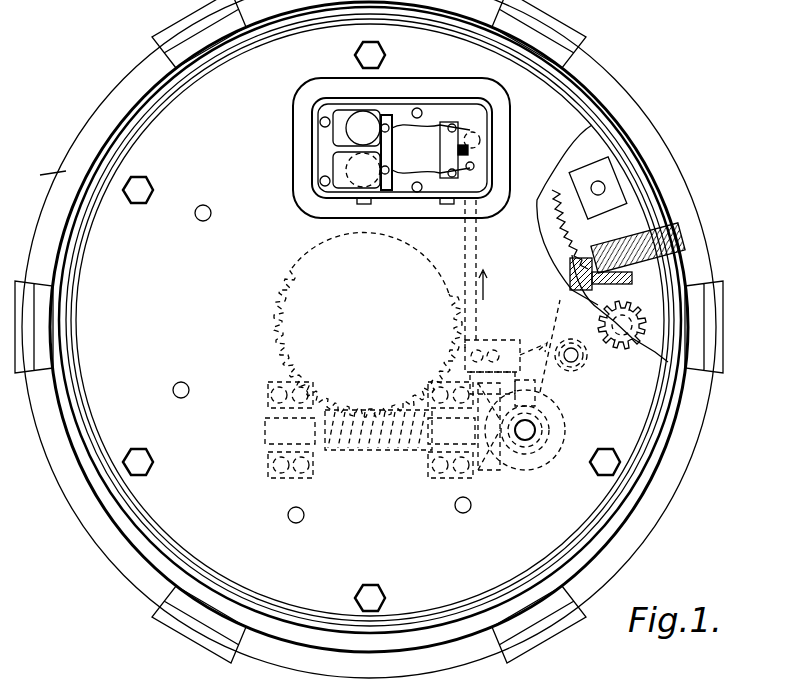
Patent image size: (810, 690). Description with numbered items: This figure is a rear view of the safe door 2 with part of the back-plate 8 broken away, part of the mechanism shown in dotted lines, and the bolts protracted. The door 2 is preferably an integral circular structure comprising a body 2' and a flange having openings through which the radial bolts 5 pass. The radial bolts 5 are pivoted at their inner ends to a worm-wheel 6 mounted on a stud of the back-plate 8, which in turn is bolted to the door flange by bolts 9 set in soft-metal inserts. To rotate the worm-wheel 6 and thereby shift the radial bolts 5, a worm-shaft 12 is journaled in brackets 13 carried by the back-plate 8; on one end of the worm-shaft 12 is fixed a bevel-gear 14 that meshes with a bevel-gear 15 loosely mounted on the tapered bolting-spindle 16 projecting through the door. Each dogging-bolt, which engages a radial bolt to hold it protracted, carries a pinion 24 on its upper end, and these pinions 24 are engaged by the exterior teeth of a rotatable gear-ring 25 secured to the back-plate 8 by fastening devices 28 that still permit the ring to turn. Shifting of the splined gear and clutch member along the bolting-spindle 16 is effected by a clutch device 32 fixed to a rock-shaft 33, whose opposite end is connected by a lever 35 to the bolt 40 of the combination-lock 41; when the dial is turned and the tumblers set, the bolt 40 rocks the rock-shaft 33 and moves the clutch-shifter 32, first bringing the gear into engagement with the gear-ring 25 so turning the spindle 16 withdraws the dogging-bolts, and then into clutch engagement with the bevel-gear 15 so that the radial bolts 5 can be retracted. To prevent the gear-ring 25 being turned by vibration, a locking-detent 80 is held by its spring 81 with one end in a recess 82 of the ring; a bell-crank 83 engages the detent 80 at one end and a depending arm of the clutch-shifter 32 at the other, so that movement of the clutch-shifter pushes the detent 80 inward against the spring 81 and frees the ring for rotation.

The door 2 is at (369, 339).
The body 2' is at (38, 175).
The radial bolts 5 is at (369, 340).
The worm-wheel 6 is at (283, 346).
The back-plate 8 is at (319, 359).
The bolts 9 is at (140, 200).
The worm-shaft 12 is at (365, 452).
The brackets 13 is at (268, 452).
The bevel-gear 14 is at (490, 472).
The bevel-gear 15 is at (532, 462).
The bolting-spindle 16 is at (528, 432).
The pinion 24 is at (636, 345).
The gear-ring 25 is at (570, 178).
The fastening devices 28 is at (299, 523).
The clutch device 32 is at (533, 415).
The rock-shaft 33 is at (463, 348).
The lever 35 is at (468, 270).
The bolt 40 is at (480, 148).
The combination-lock 41 is at (303, 150).
The locking-detent 80 is at (622, 255).
The spring 81 is at (628, 305).
The recess 82 is at (570, 268).
The bell-crank 83 is at (580, 352).